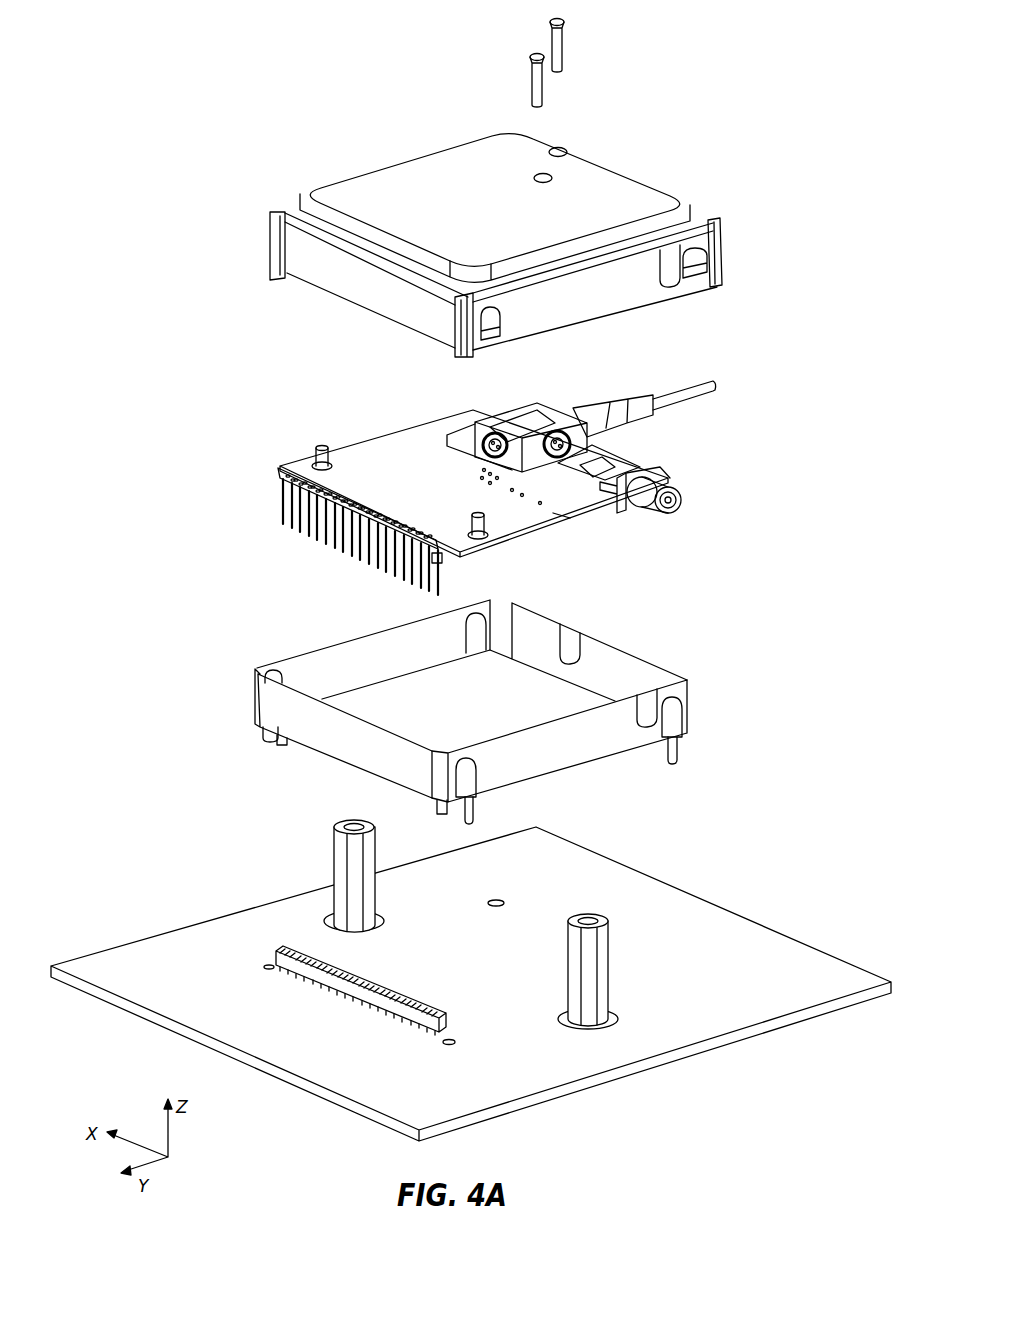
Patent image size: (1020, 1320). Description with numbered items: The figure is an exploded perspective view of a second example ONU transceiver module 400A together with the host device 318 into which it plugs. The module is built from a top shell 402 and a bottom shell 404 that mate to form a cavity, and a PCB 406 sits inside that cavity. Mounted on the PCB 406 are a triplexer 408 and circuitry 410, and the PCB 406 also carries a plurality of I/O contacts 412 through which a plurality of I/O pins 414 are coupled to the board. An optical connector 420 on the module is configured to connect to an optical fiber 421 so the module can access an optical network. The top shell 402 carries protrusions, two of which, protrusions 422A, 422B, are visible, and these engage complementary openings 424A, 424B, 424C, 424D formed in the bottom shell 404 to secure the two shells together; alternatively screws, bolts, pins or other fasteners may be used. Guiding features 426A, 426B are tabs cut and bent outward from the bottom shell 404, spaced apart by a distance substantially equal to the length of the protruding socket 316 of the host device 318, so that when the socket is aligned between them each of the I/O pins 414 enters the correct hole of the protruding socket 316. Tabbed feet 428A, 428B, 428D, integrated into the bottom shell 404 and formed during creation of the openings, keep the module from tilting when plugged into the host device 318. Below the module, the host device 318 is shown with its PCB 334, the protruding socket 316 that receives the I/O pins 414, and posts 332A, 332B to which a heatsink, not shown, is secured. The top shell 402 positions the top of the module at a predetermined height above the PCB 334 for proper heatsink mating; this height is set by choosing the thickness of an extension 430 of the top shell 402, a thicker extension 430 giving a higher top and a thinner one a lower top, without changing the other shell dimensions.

The ONU transceiver module 400A is at (230, 20).
The top shell 402 is at (535, 191).
The extension 430 is at (693, 213).
The protrusion 422A is at (493, 320).
The protrusion 422B is at (707, 260).
The PCB 406 is at (367, 450).
The I/O contacts 412 is at (442, 530).
The I/O pins 414 is at (442, 600).
The triplexer 408 is at (550, 400).
The optical connector 420 is at (604, 410).
The optical fiber 421 is at (690, 382).
The circuitry 410 is at (600, 467).
The bottom shell 404 is at (496, 712).
The opening 424A is at (478, 763).
The opening 424B is at (672, 708).
The opening 424C is at (477, 628).
The opening 424D is at (277, 682).
The guiding feature 426A is at (440, 817).
The guiding feature 426B is at (282, 737).
The tabbed foot 428A is at (473, 810).
The tabbed foot 428B is at (680, 750).
The tabbed foot 428D is at (272, 732).
The host device 318 is at (471, 972).
The PCB 334 is at (729, 941).
The post 332A is at (335, 852).
The post 332B is at (603, 971).
The protruding socket 316 is at (446, 1024).